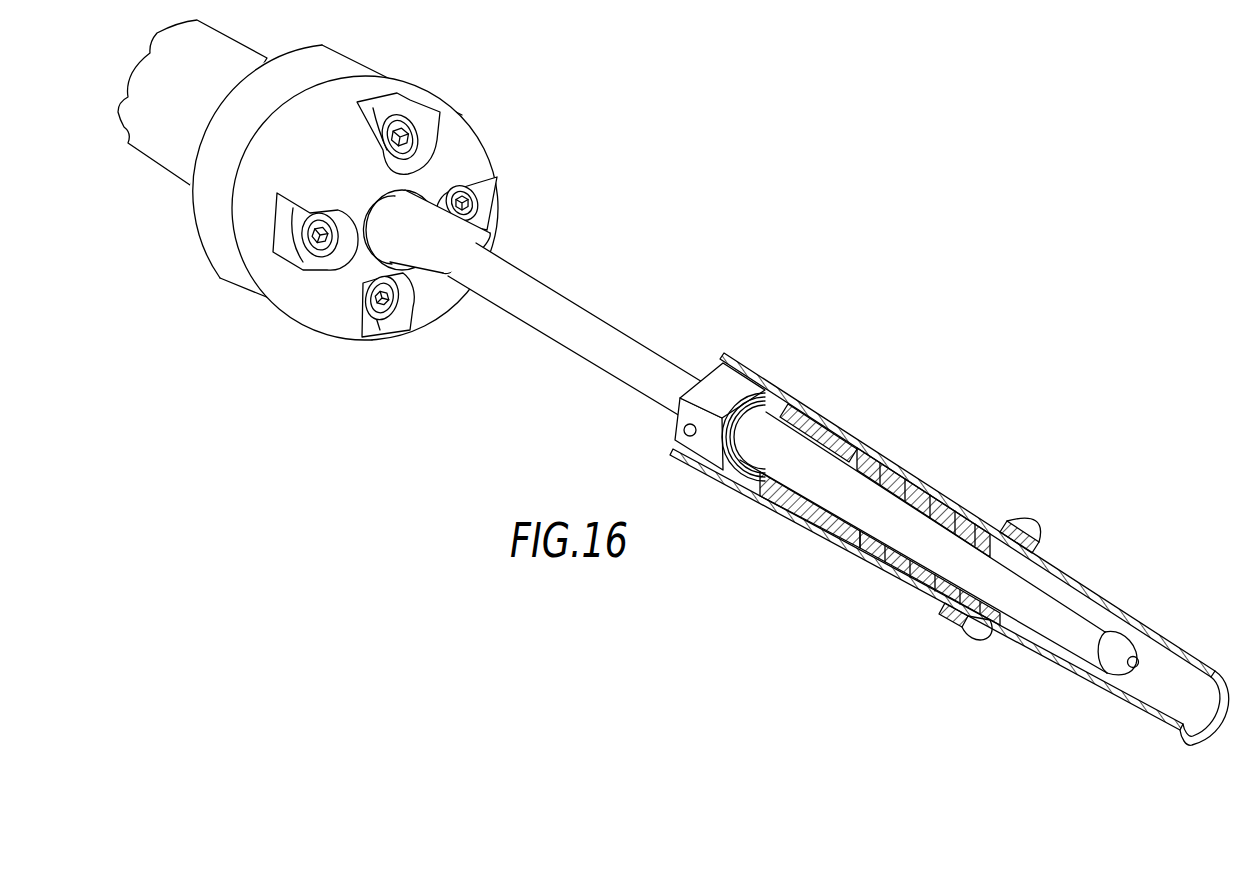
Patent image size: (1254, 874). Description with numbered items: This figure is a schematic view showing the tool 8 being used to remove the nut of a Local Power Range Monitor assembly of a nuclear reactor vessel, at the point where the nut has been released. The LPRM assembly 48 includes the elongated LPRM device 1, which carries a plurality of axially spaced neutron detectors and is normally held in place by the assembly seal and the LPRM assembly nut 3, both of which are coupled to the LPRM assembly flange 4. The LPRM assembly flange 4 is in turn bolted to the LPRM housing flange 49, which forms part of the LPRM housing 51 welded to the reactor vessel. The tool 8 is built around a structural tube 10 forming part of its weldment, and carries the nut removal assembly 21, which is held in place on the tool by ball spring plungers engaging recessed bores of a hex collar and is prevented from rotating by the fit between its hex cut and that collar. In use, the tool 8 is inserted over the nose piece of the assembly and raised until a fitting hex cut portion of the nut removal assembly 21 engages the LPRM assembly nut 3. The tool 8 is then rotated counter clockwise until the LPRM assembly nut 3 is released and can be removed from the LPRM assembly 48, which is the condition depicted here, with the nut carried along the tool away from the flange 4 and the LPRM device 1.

The LPRM device 1 is at (432, 247).
The LPRM assembly nut 3 is at (720, 380).
The LPRM assembly flange 4 is at (468, 146).
The tool 8 is at (1010, 511).
The structural tube 10 is at (1183, 657).
The nut removal assembly 21 is at (826, 410).
The LPRM assembly 48 is at (432, 97).
The LPRM housing flange 49 is at (206, 208).
The LPRM housing 51 is at (164, 150).